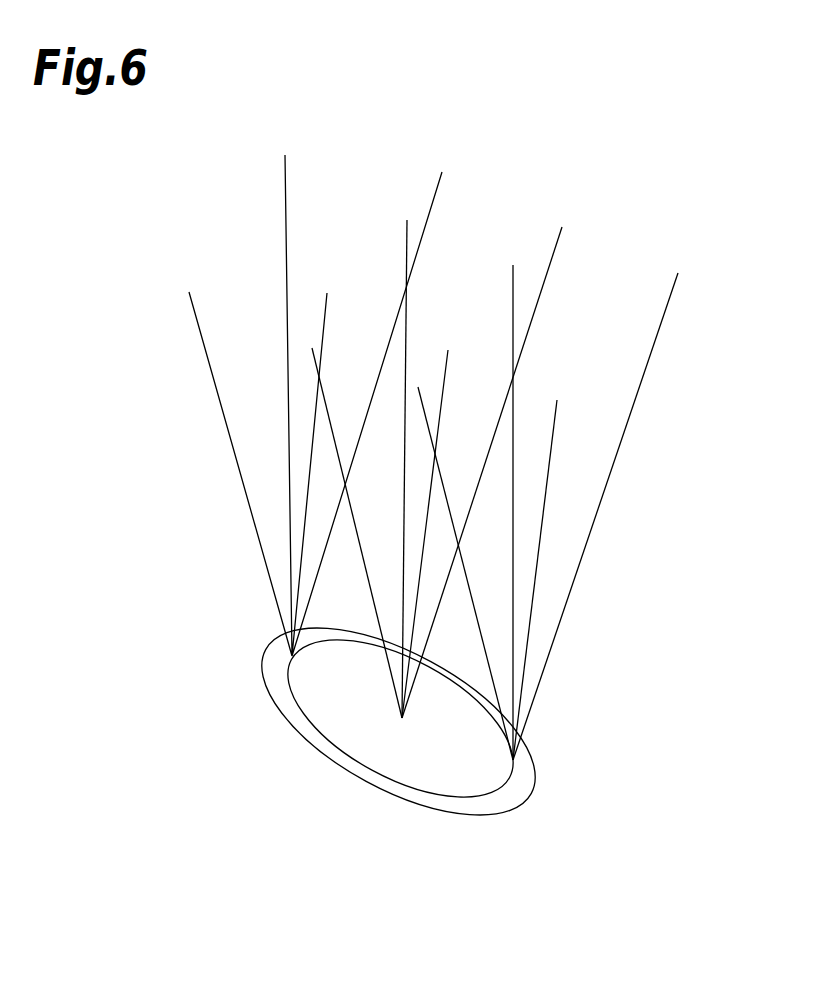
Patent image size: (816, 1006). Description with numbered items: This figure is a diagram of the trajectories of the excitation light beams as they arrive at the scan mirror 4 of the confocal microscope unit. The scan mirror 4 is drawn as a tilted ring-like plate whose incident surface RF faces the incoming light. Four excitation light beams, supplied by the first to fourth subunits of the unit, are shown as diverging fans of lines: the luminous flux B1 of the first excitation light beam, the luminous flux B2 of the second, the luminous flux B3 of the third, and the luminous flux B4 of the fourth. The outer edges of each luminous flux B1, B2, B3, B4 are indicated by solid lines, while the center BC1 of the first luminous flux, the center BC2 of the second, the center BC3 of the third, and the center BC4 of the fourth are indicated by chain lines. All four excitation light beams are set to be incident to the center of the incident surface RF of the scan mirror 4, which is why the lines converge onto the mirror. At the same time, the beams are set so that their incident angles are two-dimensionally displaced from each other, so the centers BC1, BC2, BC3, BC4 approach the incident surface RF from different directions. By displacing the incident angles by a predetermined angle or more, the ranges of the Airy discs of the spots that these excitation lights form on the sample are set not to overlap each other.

The scan mirror 4 is at (398, 736).
The incident surface RF is at (507, 800).
The luminous flux of the first excitation light beam B1 is at (513, 678).
The luminous flux of the second excitation light beam B2 is at (470, 583).
The luminous flux of the third excitation light beam B3 is at (530, 627).
The luminous flux of the fourth excitation light beam B4 is at (605, 500).
The center of the luminous flux of the first excitation light beam BC1 is at (407, 237).
The center of the luminous flux of the second excitation light beam BC2 is at (325, 398).
The center of the luminous flux of the third excitation light beam BC3 is at (445, 390).
The center of the luminous flux of the fourth excitation light beam BC4 is at (553, 258).